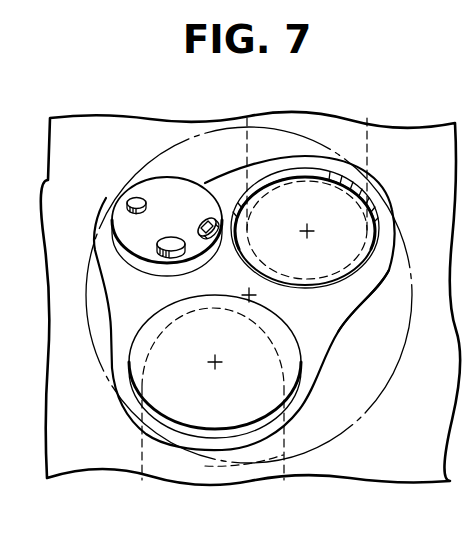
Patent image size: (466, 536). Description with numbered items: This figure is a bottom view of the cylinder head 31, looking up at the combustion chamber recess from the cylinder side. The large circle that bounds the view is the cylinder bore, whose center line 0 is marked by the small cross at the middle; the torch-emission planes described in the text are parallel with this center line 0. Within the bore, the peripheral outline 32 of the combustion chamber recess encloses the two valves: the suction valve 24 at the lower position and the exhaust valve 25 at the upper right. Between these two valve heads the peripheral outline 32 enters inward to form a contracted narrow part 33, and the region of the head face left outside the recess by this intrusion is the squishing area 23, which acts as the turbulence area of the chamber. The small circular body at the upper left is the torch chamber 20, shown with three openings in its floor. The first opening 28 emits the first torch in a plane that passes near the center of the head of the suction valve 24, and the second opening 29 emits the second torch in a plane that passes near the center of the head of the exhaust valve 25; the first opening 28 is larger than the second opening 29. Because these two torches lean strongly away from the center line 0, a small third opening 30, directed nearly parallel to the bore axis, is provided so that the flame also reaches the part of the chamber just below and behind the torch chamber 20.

The center line of the cylinder bore 0 is at (256, 297).
The torch chamber 20 is at (128, 237).
The squishing area 23 is at (320, 431).
The suction valve 24 is at (175, 407).
The exhaust valve 25 is at (338, 202).
The first opening 28 is at (170, 255).
The second opening 29 is at (214, 218).
The third opening 30 is at (127, 199).
The cylinder head 31 is at (346, 296).
The peripheral outline of the combustion chamber recess 32 is at (293, 157).
The contracted narrow part 33 is at (330, 345).